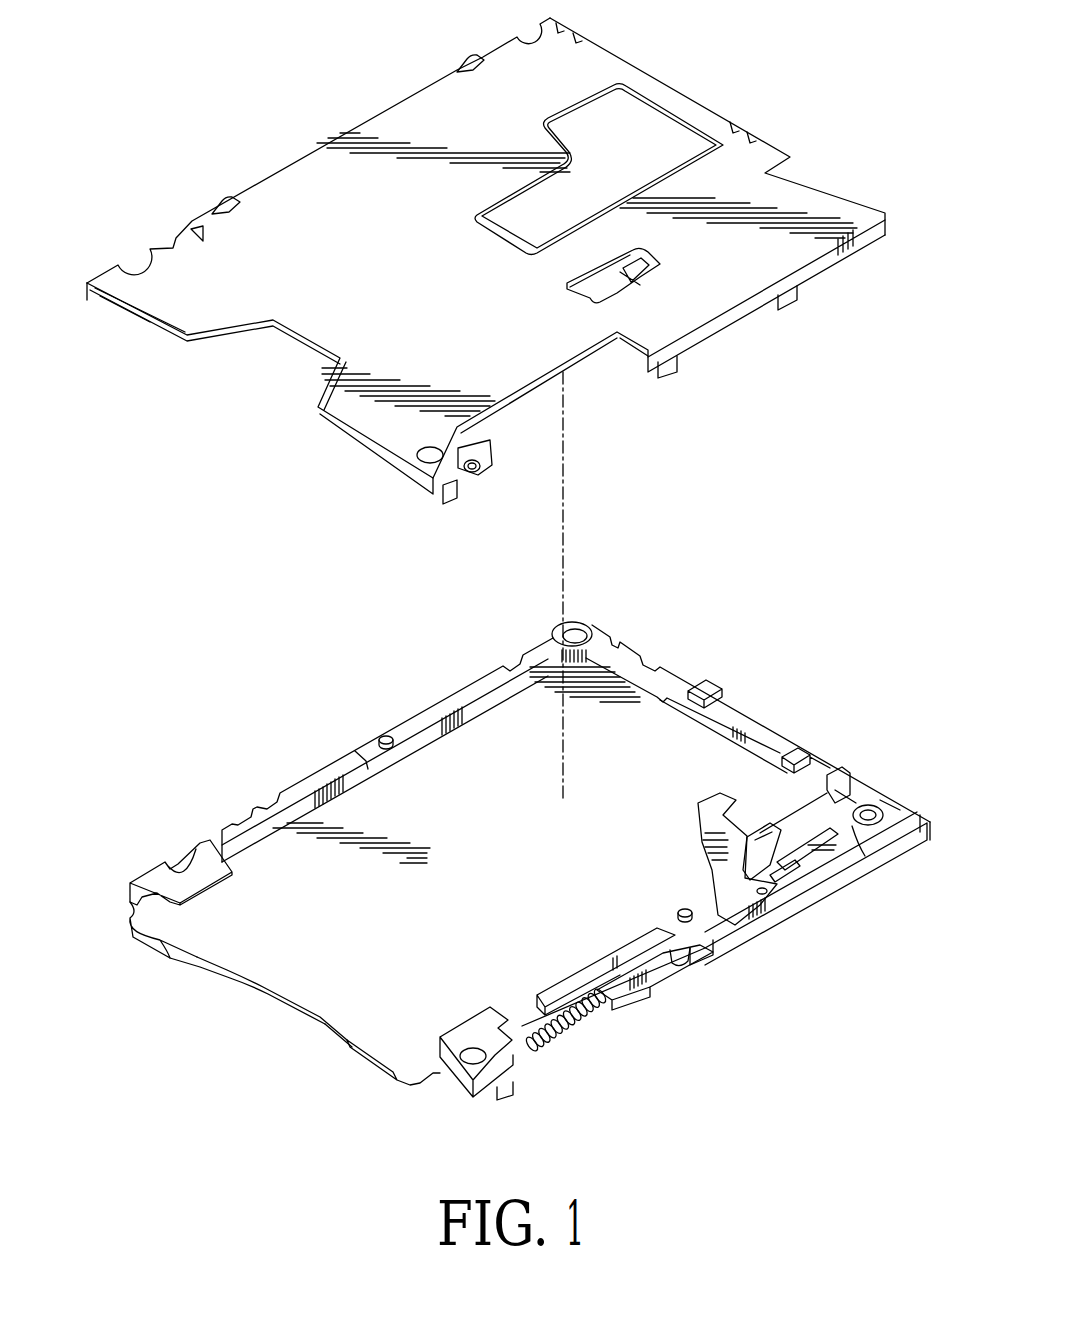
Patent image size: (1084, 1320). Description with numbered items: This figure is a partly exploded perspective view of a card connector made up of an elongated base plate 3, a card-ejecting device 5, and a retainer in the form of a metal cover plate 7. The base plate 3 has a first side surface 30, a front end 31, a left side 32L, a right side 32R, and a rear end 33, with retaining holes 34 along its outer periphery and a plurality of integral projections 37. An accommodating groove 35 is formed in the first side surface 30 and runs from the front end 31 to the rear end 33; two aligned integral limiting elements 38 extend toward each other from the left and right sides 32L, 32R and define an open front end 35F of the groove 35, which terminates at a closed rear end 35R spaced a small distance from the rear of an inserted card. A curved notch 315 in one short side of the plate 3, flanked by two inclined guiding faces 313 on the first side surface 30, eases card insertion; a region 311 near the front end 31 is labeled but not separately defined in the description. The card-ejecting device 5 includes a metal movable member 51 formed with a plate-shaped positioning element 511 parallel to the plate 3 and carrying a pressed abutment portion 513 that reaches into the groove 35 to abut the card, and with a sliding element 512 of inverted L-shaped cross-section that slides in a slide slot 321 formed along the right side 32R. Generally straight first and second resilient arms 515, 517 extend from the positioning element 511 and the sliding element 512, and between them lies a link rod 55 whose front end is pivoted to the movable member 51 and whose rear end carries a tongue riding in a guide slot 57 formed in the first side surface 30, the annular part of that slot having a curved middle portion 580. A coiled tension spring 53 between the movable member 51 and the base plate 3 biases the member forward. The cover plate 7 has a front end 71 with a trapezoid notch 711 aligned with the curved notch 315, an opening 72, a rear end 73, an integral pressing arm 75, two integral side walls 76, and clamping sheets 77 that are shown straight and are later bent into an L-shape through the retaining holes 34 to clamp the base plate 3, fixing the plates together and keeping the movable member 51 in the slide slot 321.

The cover plate 7 is at (405, 128).
The front end 71 is at (187, 302).
The trapezoid notch 711 is at (303, 340).
The opening 72 is at (637, 200).
The rear end 73 is at (593, 75).
The pressing arm 75 is at (620, 290).
The side walls 76 is at (720, 327).
The clamping sheets 77 is at (790, 307).
The base plate 3 is at (399, 691).
The first side surface 30 is at (623, 657).
The front end 31 is at (273, 965).
The bulge of front wall 311 is at (167, 933).
The inclined guiding faces 313 is at (377, 1063).
The curved notch 315 is at (295, 1008).
The left side 32L is at (477, 682).
The right side 32R is at (887, 860).
The slide slot 321 is at (670, 970).
The rear end 33 is at (713, 747).
The retaining holes 34 is at (707, 953).
The accommodating groove 35 is at (330, 810).
The open front end 35F is at (327, 983).
The closed rear end 35R is at (653, 687).
The integral projections 37 is at (387, 737).
The limiting elements 38 is at (203, 857).
The card-ejecting device 5 is at (730, 896).
The movable member 51 is at (743, 897).
The positioning element 511 is at (797, 750).
The sliding element 512 is at (617, 998).
The pressed abutment portion 513 is at (737, 833).
The first resilient arm 515 is at (787, 833).
The second resilient arm 517 is at (783, 890).
The coiled tension spring 53 is at (567, 1020).
The link rod 55 is at (797, 868).
The guide slot 57 is at (911, 773).
The curved middle portion 580 is at (867, 850).